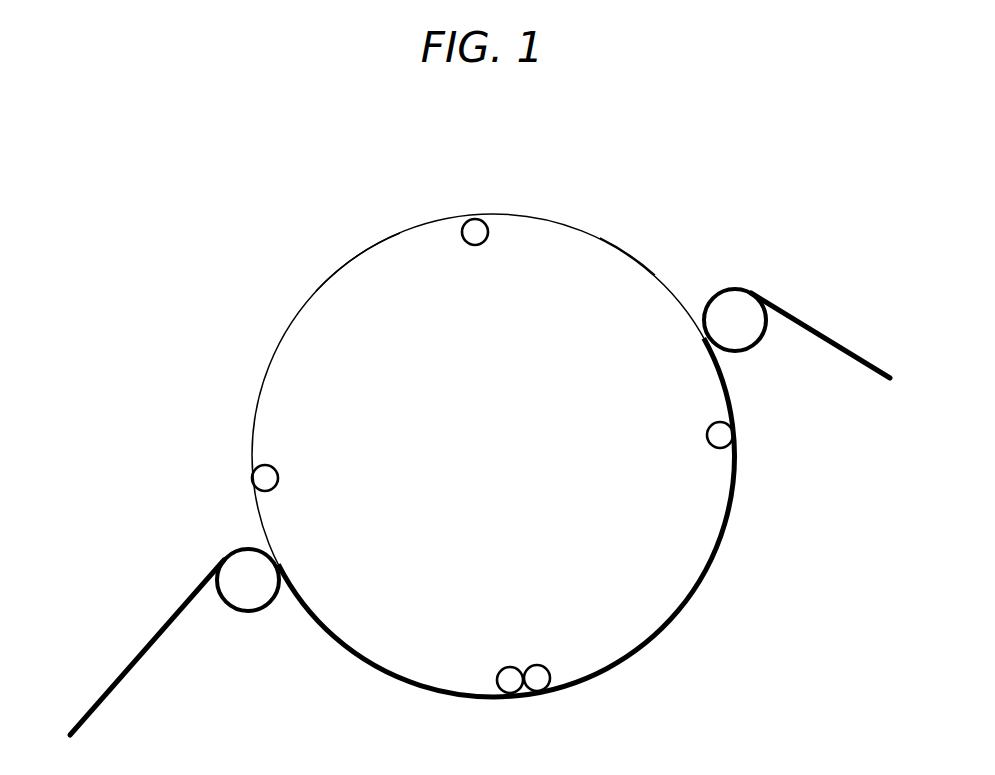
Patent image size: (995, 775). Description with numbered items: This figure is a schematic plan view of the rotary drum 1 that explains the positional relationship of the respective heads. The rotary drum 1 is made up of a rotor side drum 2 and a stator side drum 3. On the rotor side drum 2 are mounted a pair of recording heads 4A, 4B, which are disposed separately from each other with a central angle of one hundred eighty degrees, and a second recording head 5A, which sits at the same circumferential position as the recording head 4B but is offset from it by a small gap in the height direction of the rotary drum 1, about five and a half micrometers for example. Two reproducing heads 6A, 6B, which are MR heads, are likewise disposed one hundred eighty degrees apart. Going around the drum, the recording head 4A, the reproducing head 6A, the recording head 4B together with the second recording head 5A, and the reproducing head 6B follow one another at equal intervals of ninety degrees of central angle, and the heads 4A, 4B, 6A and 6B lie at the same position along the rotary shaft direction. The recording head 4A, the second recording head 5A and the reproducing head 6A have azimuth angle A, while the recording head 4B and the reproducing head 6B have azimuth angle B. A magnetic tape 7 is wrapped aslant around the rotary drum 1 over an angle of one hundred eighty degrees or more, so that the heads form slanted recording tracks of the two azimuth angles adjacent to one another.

The rotary drum 1 is at (618, 240).
The rotor side drum 2 is at (316, 291).
The stator side drum 3 is at (655, 275).
The recording head 4A is at (478, 221).
The recording head 4B is at (510, 694).
The second recording head 5A is at (538, 692).
The reproducing head 6A is at (738, 434).
The reproducing head 6B is at (252, 478).
The magnetic tape 7 is at (852, 354).